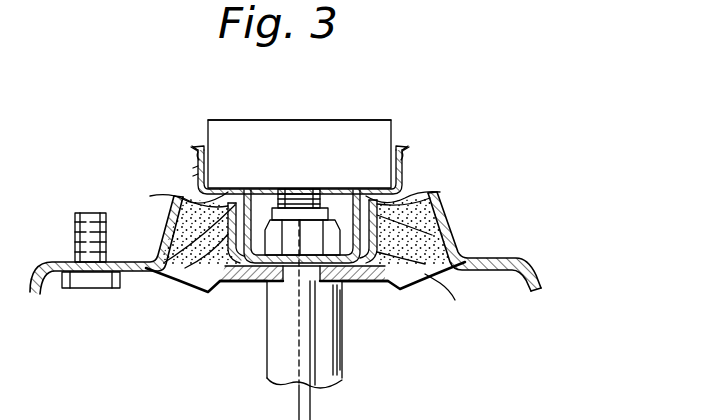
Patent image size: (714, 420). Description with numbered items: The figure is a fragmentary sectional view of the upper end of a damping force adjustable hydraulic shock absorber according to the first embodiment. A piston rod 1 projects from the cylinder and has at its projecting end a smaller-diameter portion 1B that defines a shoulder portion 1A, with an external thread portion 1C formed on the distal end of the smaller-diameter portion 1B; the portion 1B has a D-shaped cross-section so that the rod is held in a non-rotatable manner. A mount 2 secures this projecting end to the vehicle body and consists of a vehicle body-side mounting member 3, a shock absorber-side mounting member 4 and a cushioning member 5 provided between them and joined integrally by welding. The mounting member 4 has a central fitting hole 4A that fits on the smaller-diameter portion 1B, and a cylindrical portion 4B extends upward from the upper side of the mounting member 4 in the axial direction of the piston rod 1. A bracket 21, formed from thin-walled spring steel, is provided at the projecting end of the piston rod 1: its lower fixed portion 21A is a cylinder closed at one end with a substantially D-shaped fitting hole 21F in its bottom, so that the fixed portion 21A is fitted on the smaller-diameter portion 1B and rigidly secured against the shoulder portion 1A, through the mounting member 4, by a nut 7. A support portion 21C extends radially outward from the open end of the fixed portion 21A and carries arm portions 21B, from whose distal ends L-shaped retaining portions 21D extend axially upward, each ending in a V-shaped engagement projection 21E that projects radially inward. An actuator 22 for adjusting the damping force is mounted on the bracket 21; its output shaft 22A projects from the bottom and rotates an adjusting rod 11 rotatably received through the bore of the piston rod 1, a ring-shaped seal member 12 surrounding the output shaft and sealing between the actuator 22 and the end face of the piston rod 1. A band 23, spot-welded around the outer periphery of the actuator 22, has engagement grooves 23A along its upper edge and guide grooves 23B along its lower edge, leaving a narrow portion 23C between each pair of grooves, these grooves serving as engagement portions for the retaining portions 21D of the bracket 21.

The piston rod 1 is at (268, 376).
The shoulder portion 1A is at (264, 280).
The smaller-diameter portion 1B is at (283, 367).
The external thread portion 1C is at (380, 212).
The mount 2 is at (461, 251).
The vehicle body-side mounting member 3 is at (541, 285).
The shock absorber-side mounting member 4 is at (355, 283).
The fitting hole 4A is at (318, 275).
The cylindrical portion 4B is at (163, 281).
The cushioning member 5 is at (450, 288).
The nut 7 is at (428, 282).
The adjusting rod 11 is at (312, 397).
The seal member 12 is at (285, 200).
The bracket 21 is at (430, 216).
The fixed portion 21A is at (176, 278).
The arm portions 21B is at (430, 192).
The support portion 21C is at (172, 196).
The retaining portions 21D is at (197, 160).
The engagement projection 21E is at (195, 152).
The fitting hole 21F is at (233, 275).
The actuator 22 is at (352, 128).
The output shaft 22A is at (298, 200).
The band 23 is at (400, 148).
The engagement grooves 23A is at (200, 148).
The guide grooves 23B is at (197, 172).
The narrow portion 23C is at (402, 160).